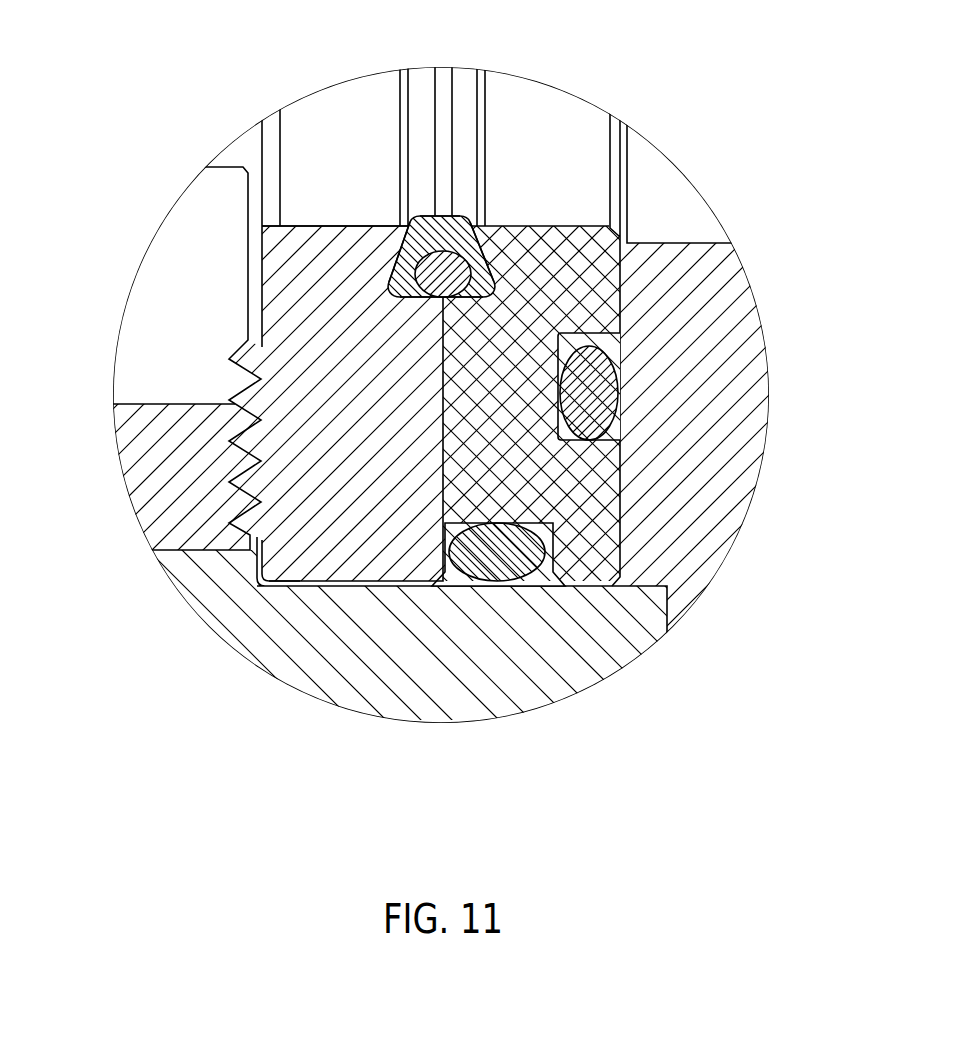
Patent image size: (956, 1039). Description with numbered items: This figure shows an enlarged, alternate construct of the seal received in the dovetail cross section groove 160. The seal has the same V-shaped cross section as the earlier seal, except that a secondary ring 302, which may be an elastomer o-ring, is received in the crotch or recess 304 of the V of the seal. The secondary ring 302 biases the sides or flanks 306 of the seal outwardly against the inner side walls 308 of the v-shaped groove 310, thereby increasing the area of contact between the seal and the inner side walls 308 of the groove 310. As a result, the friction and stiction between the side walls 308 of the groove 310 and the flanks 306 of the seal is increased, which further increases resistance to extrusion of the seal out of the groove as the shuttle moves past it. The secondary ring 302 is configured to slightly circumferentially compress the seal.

The dovetail cross section groove 160 is at (469, 297).
The secondary ring 302 is at (490, 240).
The crotch or recess 304 is at (455, 260).
The flanks 306 is at (400, 261).
The inner side walls 308 is at (394, 281).
The v-shaped groove 310 is at (490, 311).